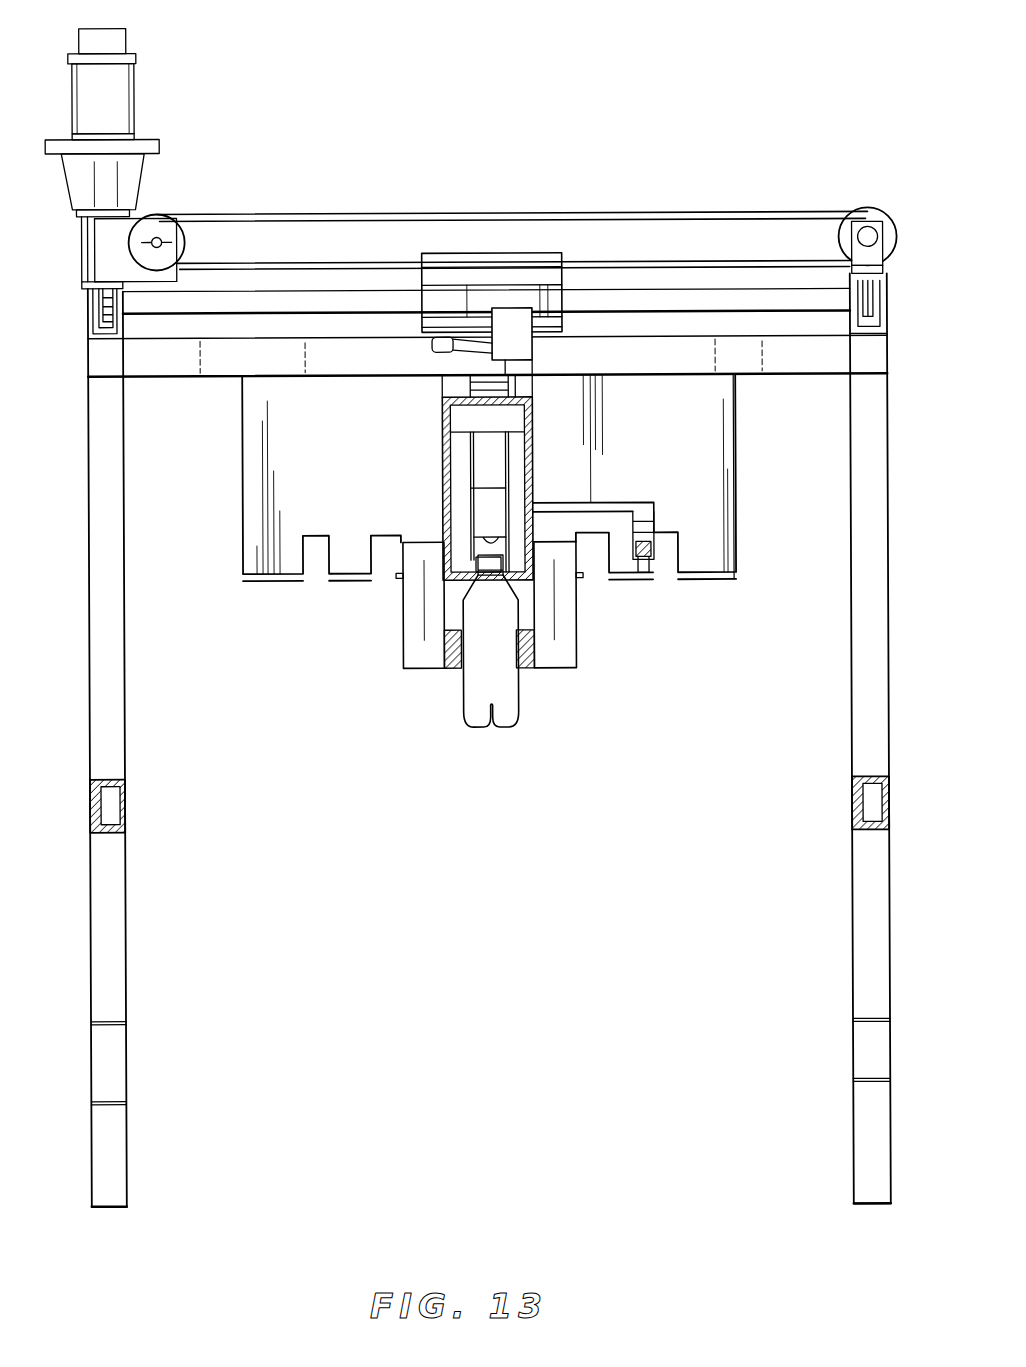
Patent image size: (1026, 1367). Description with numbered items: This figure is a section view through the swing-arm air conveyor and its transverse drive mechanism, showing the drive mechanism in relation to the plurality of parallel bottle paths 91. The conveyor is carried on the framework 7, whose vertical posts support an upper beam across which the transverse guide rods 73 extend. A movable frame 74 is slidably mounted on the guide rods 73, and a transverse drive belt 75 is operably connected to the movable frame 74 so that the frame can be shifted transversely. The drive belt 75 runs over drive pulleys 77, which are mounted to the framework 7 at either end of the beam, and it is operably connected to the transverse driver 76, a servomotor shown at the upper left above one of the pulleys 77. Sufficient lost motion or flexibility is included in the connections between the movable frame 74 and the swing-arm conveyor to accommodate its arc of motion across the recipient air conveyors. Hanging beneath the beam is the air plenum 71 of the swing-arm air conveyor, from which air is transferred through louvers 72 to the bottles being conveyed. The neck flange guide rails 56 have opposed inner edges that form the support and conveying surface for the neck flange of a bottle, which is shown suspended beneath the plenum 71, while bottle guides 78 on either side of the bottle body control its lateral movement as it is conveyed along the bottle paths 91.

The framework 7 is at (800, 353).
The neck flange guide rails 56 is at (513, 578).
The air plenum 71 is at (442, 447).
The louvers 72 is at (462, 540).
The transverse guide rods 73 is at (153, 302).
The movable frame 74 is at (441, 300).
The transverse drive belt 75 is at (237, 218).
The transverse driver 76 is at (95, 85).
The drive pulleys 77 is at (156, 222).
The bottle guides 78 is at (420, 668).
The parallel bottle paths 91 is at (310, 578).